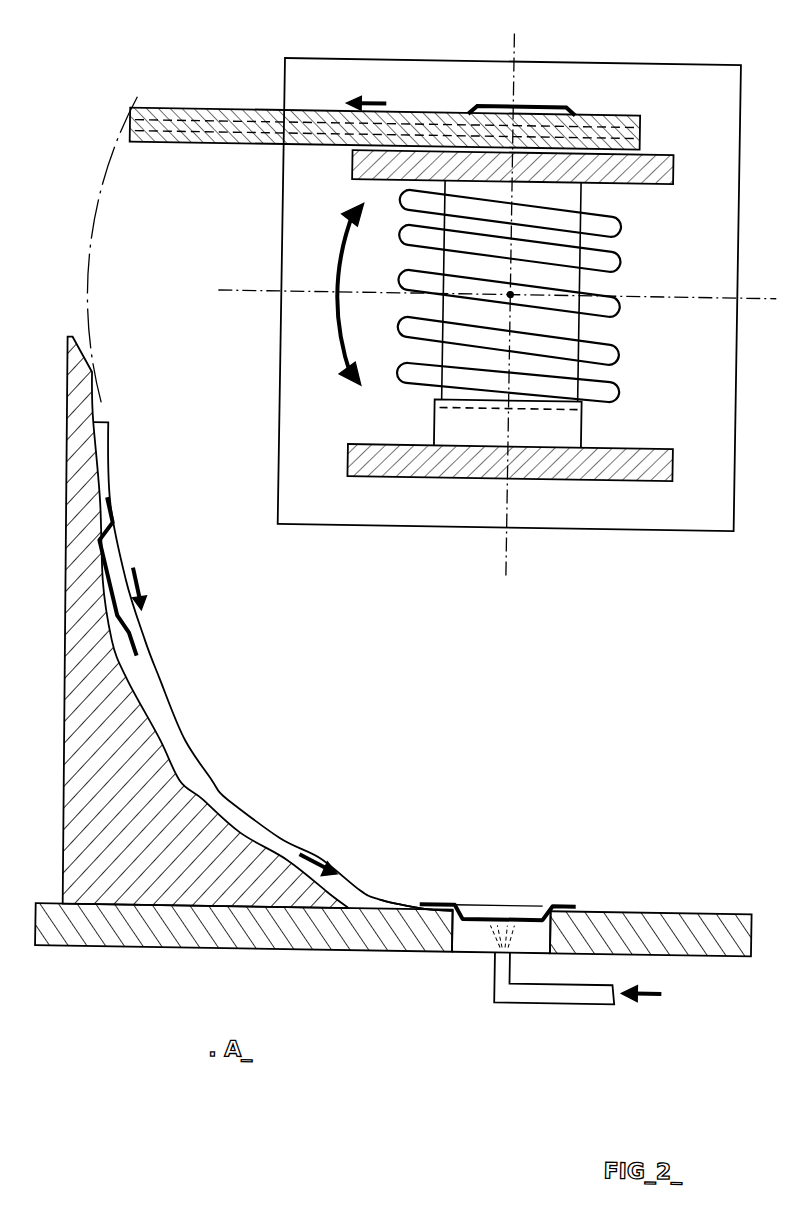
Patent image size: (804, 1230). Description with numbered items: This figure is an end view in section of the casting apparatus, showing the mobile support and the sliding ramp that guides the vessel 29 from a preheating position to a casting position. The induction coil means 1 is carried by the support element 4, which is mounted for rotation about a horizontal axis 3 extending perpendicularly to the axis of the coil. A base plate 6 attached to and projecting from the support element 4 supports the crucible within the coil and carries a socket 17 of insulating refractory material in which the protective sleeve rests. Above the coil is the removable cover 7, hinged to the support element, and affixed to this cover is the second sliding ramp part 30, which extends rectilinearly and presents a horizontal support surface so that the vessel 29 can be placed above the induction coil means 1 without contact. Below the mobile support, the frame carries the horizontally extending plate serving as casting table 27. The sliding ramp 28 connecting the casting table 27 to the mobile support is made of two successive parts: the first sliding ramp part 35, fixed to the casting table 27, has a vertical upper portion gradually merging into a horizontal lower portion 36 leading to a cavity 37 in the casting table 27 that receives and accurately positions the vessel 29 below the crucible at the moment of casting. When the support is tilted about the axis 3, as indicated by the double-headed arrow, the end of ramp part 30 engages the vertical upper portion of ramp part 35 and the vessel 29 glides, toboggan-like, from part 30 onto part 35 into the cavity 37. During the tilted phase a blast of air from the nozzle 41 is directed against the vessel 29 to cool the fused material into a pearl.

The induction coil means 1 is at (619, 350).
The horizontal axis 3 is at (516, 290).
The support element 4 is at (711, 445).
The base plate 6 is at (641, 472).
The removable cover 7 is at (667, 171).
The socket 17 is at (478, 427).
The casting table 27 is at (712, 918).
The sliding ramp 28 is at (135, 556).
The vessel 29 is at (540, 100).
The second sliding ramp part 30 is at (175, 112).
The first sliding ramp part 35 is at (232, 853).
The horizontal lower portion 36 is at (410, 903).
The cavity 37 is at (481, 926).
The nozzle 41 is at (520, 986).